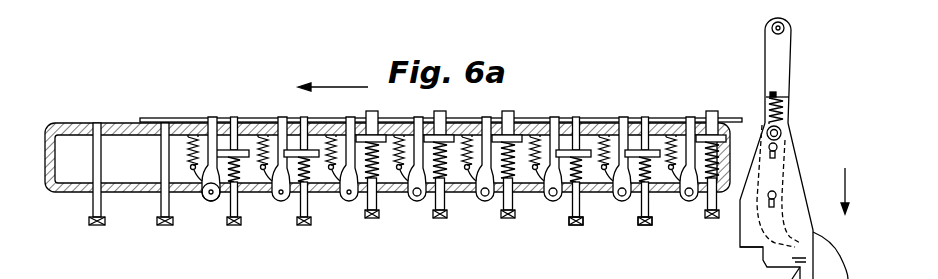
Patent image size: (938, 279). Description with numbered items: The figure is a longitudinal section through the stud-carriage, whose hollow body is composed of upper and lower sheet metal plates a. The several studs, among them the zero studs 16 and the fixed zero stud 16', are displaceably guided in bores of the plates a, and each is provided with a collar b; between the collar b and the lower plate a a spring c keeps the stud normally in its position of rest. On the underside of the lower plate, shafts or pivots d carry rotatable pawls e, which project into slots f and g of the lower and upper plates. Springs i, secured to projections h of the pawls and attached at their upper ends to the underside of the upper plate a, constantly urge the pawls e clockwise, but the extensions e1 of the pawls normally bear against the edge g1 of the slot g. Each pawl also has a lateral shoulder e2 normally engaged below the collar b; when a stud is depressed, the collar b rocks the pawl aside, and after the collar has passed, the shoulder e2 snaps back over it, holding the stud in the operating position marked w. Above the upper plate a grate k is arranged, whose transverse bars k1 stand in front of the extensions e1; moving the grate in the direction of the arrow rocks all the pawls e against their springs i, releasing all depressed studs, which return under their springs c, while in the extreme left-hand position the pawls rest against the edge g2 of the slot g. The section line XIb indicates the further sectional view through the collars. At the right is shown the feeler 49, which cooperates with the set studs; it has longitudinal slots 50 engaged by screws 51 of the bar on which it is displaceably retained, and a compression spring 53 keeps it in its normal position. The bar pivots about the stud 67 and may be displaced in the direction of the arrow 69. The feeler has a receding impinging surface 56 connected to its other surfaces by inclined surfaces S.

The sheet metal plate a is at (114, 123).
The zero stud 16 is at (186, 160).
The zero stud 16' is at (152, 174).
The section line XIb is at (196, 143).
The slot of the upper plate g is at (279, 120).
The pawl e is at (248, 159).
The slot of the lower plate f is at (202, 200).
The shaft or pivot d is at (211, 201).
The spring c is at (238, 180).
The collar b is at (309, 150).
The edge of slot g g2 is at (488, 113).
The projection of the pawl h is at (402, 187).
The lateral projection or shoulder e2 is at (680, 109).
The transverse bar of the grate k1 is at (505, 112).
The spring i is at (467, 137).
The edge of slot g g1 is at (626, 110).
The extension of the pawl e1 is at (638, 150).
The grate k is at (601, 120).
The operating position w is at (610, 229).
The feeler 49 is at (783, 237).
The stud 67 is at (785, 28).
The compression spring 53 is at (783, 108).
The screw 51 is at (767, 134).
The longitudinal slot 50 is at (783, 146).
The arrow 69 is at (854, 191).
The inclined surface S is at (806, 260).
The impinging surface 56 is at (749, 250).